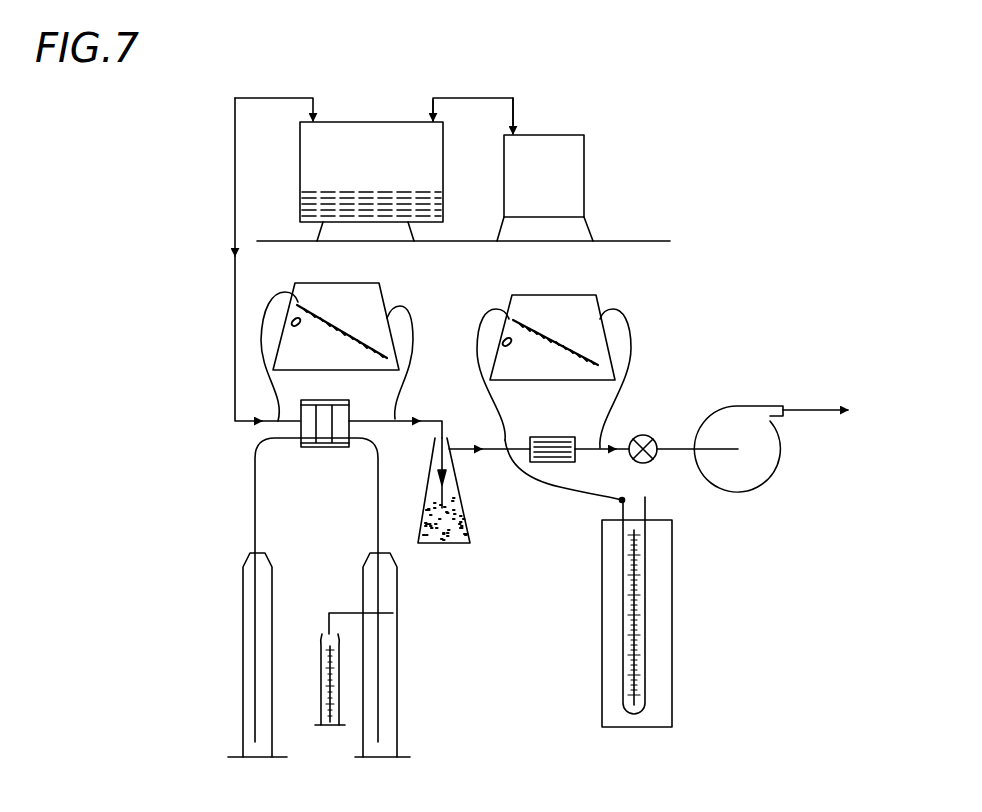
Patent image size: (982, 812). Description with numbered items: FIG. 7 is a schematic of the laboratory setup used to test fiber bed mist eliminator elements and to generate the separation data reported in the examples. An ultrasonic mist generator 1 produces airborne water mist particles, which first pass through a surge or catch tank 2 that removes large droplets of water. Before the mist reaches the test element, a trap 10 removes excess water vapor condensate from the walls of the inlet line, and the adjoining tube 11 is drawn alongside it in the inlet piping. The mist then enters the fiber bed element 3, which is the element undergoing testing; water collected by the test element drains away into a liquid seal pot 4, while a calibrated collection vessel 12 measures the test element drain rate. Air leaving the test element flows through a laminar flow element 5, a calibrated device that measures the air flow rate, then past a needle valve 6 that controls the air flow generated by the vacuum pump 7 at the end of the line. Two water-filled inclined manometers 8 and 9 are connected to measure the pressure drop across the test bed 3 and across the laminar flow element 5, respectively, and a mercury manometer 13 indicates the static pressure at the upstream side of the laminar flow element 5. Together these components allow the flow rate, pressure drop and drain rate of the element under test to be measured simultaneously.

The ultrasonic mist generator 1 is at (584, 147).
The surge or catch tank 2 is at (368, 121).
The fiber bed element 3 is at (322, 447).
The liquid seal pot 4 is at (463, 514).
The laminar flow element 5 is at (550, 437).
The needle valve 6 is at (658, 458).
The vacuum pump 7 is at (731, 406).
The inclined manometer 8 is at (385, 297).
The inclined manometer 9 is at (583, 293).
The trap 10 is at (272, 576).
The right collecting tube 11 is at (395, 607).
The calibrated collection vessel 12 is at (321, 686).
The mercury manometer 13 is at (672, 582).